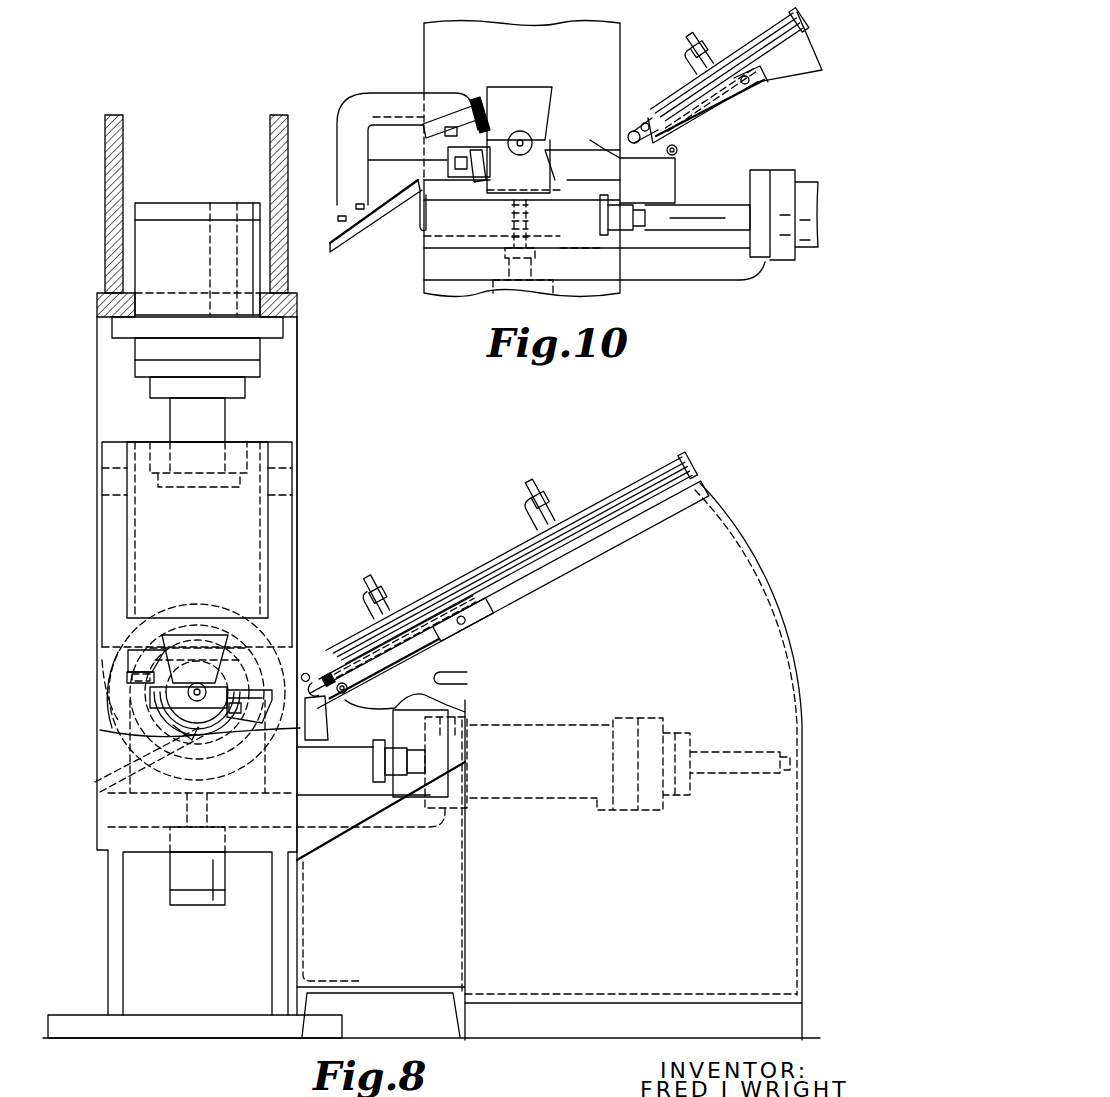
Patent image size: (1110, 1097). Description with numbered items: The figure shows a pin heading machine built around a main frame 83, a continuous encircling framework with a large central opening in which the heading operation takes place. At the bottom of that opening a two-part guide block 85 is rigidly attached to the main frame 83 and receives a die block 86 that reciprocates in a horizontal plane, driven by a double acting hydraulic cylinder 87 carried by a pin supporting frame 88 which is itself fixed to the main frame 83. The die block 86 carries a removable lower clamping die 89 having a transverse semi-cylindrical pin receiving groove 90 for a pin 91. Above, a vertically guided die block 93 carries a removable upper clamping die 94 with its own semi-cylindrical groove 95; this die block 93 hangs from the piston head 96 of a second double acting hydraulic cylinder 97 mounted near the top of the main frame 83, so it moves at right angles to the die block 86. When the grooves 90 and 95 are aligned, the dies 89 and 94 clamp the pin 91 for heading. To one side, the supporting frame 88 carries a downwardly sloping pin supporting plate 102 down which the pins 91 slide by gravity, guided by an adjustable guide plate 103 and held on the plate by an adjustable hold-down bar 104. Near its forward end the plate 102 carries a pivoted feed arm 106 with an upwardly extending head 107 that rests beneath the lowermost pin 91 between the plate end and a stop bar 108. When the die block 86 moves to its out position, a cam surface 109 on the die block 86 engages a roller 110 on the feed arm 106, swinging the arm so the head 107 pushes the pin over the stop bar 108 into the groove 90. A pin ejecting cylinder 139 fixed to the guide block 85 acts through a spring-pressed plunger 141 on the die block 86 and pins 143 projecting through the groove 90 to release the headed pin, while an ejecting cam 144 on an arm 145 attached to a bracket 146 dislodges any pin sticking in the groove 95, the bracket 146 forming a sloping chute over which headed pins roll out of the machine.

In FIG. 8, the main frame 83 is at (316, 350).
In FIG. 10, the main frame 83 is at (677, 300).
In FIG. 8, the guide block 85 is at (330, 820).
In FIG. 10, the guide block 85 is at (650, 267).
In FIG. 8, the die block 86 is at (395, 745).
In FIG. 10, the die block 86 is at (605, 217).
In FIG. 8, the hydraulic cylinder 87 is at (540, 732).
In FIG. 10, the hydraulic cylinder 87 is at (785, 185).
In FIG. 8, the pin supporting frame 88 is at (633, 761).
In FIG. 8, the lower clamping die 89 is at (318, 735).
In FIG. 10, the lower clamping die 89 is at (545, 178).
In FIG. 8, the pin receiving groove 90 is at (295, 710).
In FIG. 10, the pin receiving groove 90 is at (522, 150).
In FIG. 8, the pin 91 is at (356, 604).
In FIG. 10, the pin 91 is at (652, 118).
In FIG. 8, the die block 93 is at (197, 544).
In FIG. 10, the die block 93 is at (587, 159).
In FIG. 8, the upper clamping die 94 is at (190, 635).
In FIG. 10, the upper clamping die 94 is at (519, 140).
In FIG. 8, the pin receiving groove 95 is at (200, 690).
In FIG. 10, the pin receiving groove 95 is at (518, 140).
In FIG. 8, the piston head 96 is at (197, 390).
In FIG. 8, the hydraulic cylinder 97 is at (183, 240).
In FIG. 8, the pin supporting plate 102 is at (519, 612).
In FIG. 8, the guide plate 103 is at (497, 534).
In FIG. 8, the hold-down bar 104 is at (427, 577).
In FIG. 10, the hold-down bar 104 is at (736, 50).
In FIG. 8, the feed arm 106 is at (418, 668).
In FIG. 10, the feed arm 106 is at (712, 122).
In FIG. 8, the head 107 is at (329, 645).
In FIG. 10, the head 107 is at (660, 148).
In FIG. 8, the stop bar 108 is at (326, 627).
In FIG. 8, the cam surface 109 is at (385, 712).
In FIG. 10, the cam surface 109 is at (598, 152).
In FIG. 8, the roller 110 is at (342, 695).
In FIG. 10, the roller 110 is at (676, 154).
In FIG. 8, the pin ejecting cylinder 139 is at (193, 895).
In FIG. 10, the spring-pressed plunger 141 is at (533, 246).
In FIG. 10, the pins 143 is at (540, 186).
In FIG. 10, the ejecting cam 144 is at (440, 128).
In FIG. 8, the arm 145 is at (118, 700).
In FIG. 10, the arm 145 is at (352, 110).
In FIG. 8, the bracket 146 is at (110, 775).
In FIG. 10, the bracket 146 is at (378, 210).